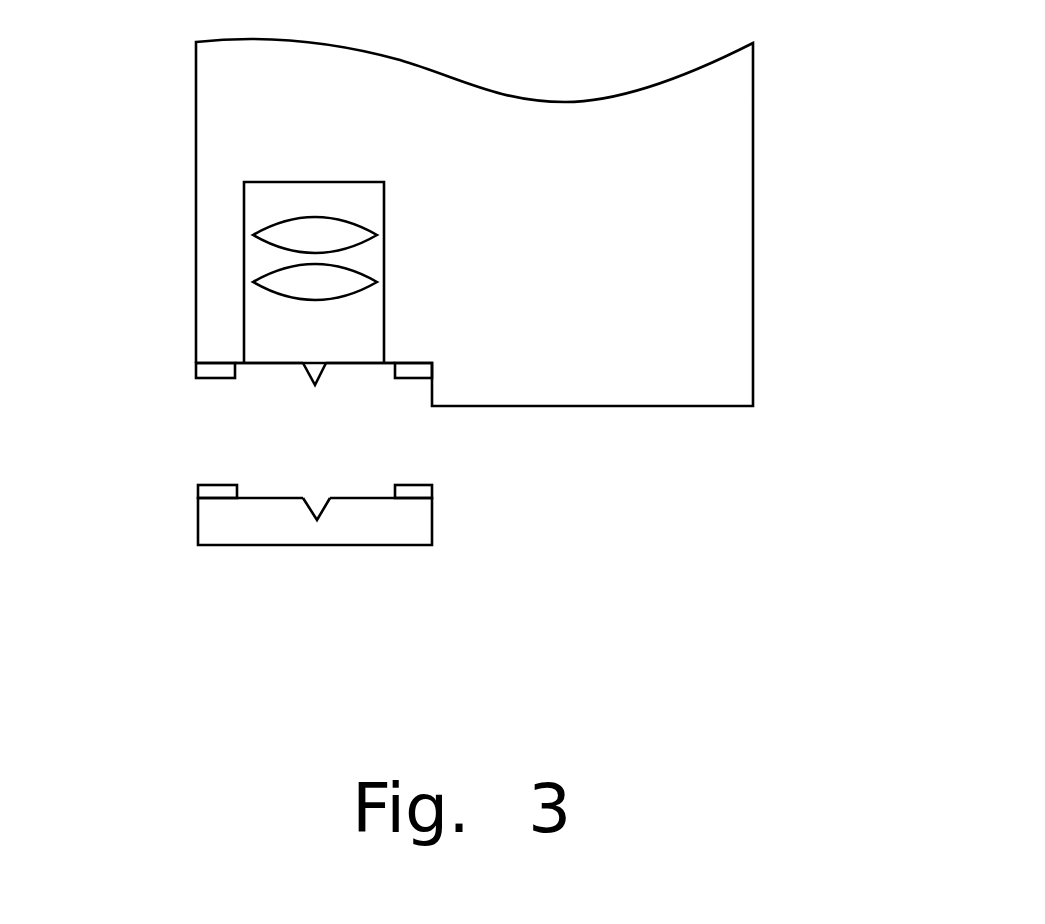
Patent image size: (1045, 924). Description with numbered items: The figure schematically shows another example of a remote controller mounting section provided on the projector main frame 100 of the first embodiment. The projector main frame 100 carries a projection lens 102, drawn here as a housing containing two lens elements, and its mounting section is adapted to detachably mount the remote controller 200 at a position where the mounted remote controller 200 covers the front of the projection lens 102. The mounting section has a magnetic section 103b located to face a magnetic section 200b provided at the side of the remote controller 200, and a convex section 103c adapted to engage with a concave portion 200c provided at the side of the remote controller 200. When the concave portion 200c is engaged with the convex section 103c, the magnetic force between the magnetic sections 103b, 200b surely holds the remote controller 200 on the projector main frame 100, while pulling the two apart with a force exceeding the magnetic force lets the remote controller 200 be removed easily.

The projector main frame 100 is at (753, 128).
The projection lens 102 is at (262, 260).
The magnetic section 103b is at (217, 378).
The convex section 103c is at (323, 367).
The remote controller 200 is at (432, 532).
The magnetic section 200b is at (218, 485).
The concave portion 200c is at (315, 497).